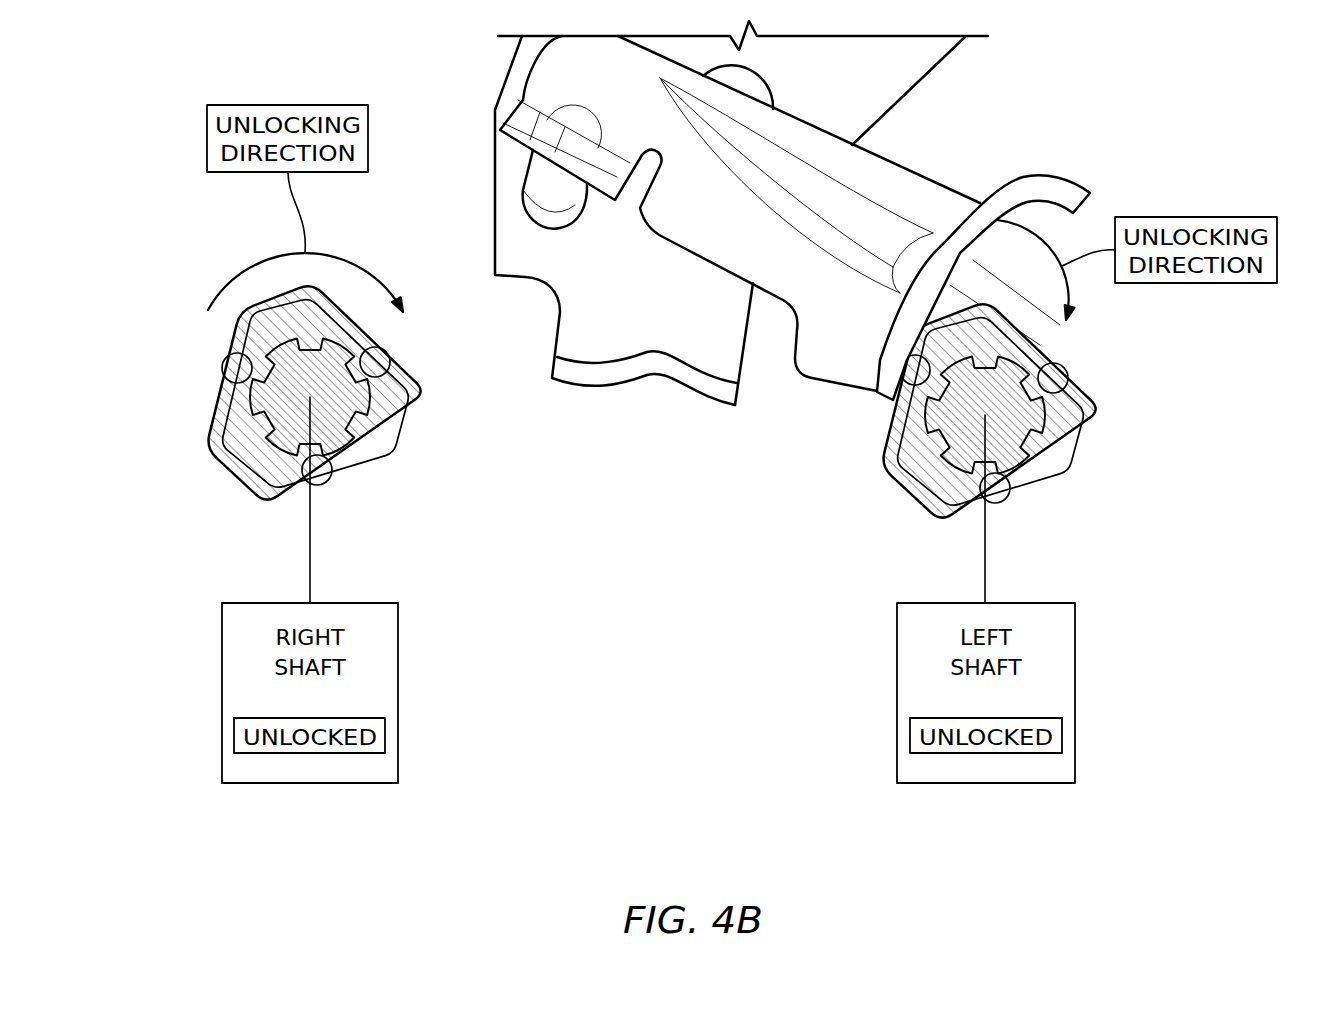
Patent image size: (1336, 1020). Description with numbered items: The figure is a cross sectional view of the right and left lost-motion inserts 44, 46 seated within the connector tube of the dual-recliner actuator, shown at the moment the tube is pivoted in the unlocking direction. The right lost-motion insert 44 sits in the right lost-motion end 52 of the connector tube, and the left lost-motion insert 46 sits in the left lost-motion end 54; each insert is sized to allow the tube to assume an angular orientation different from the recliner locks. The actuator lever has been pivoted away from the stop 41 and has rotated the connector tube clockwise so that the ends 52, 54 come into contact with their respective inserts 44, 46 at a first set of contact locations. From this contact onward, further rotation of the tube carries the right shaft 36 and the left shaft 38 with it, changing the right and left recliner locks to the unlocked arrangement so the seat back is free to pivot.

The right shaft 36 is at (207, 465).
The left shaft 38 is at (932, 479).
The stop 41 is at (650, 400).
The right lost-motion insert 44 is at (385, 430).
The left lost-motion insert 46 is at (1022, 410).
The right lost-motion end 52 is at (410, 460).
The left lost-motion end 54 is at (1030, 414).